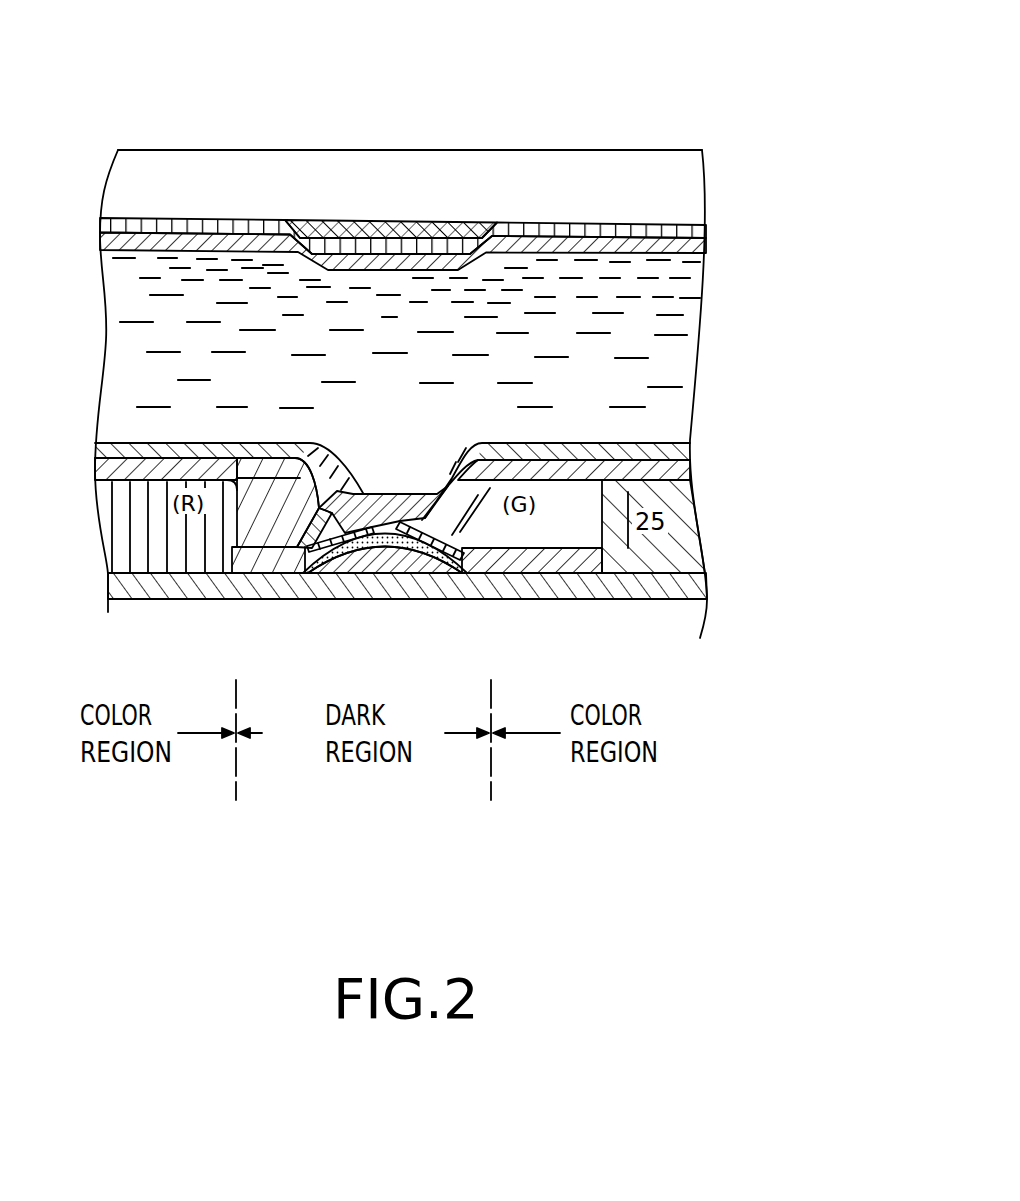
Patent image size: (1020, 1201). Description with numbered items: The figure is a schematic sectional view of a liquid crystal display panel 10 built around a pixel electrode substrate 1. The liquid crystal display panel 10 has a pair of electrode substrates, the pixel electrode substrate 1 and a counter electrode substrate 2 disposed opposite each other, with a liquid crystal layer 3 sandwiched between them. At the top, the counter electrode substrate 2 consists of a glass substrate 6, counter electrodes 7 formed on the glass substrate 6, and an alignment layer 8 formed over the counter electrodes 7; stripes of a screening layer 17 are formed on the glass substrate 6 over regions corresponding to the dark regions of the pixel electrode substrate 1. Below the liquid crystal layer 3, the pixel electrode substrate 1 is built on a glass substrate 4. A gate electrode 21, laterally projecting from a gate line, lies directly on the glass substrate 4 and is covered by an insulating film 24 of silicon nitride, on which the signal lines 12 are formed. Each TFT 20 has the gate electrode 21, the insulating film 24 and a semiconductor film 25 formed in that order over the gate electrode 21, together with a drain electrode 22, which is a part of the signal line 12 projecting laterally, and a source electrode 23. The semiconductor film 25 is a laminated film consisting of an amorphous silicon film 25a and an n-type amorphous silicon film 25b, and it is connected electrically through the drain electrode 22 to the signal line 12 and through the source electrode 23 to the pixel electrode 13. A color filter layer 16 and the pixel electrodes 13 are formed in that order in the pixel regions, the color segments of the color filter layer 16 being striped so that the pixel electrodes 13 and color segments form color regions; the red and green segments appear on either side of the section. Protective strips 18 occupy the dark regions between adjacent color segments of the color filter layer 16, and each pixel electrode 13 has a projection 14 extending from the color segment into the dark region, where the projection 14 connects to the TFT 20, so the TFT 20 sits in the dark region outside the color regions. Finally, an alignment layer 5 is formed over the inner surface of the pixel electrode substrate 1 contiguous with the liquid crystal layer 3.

The liquid crystal display panel 10 is at (643, 99).
The counter electrode substrate 2 is at (752, 196).
The pixel electrode substrate 1 is at (770, 483).
The glass substrate 6 is at (688, 172).
The counter electrodes 7 is at (706, 230).
The screening layer 17 is at (422, 220).
The alignment layer 8 is at (706, 249).
The liquid crystal layer 3 is at (665, 350).
The alignment layer 5 is at (628, 450).
The pixel electrodes 13 is at (120, 470).
The projection 14 is at (275, 492).
The insulating film 24 is at (292, 585).
The source electrode 23 is at (330, 492).
The gate electrode 21 is at (394, 588).
The amorphous silicon film 25a is at (472, 545).
The n-type amorphous silicon film 25b is at (480, 520).
The semiconductor film 25 is at (647, 520).
The signal lines 12 is at (605, 565).
The glass substrate 4 is at (687, 620).
The color filter layer 16 is at (177, 553).
The protective strips 18 is at (357, 497).
The TFT 20 is at (394, 519).
The drain electrode 22 is at (440, 515).